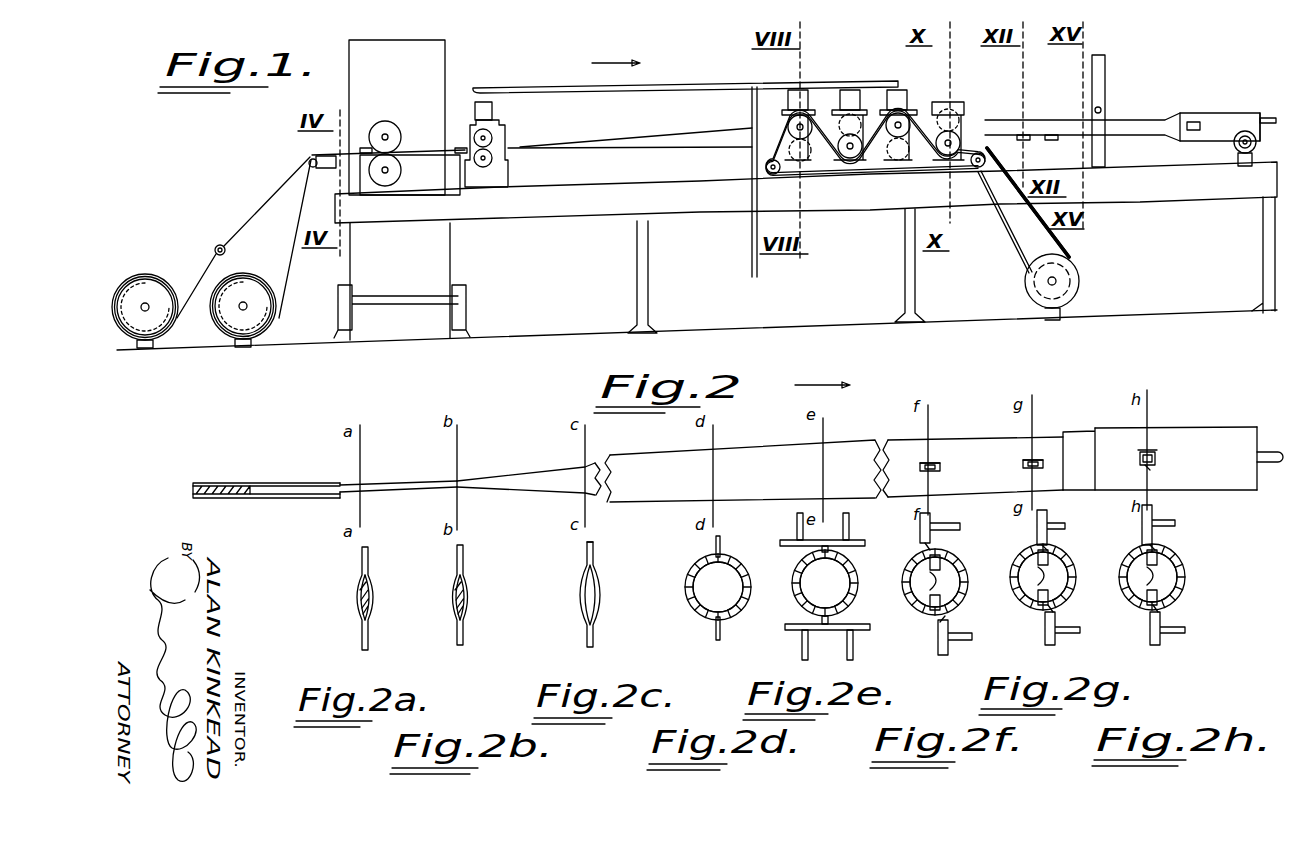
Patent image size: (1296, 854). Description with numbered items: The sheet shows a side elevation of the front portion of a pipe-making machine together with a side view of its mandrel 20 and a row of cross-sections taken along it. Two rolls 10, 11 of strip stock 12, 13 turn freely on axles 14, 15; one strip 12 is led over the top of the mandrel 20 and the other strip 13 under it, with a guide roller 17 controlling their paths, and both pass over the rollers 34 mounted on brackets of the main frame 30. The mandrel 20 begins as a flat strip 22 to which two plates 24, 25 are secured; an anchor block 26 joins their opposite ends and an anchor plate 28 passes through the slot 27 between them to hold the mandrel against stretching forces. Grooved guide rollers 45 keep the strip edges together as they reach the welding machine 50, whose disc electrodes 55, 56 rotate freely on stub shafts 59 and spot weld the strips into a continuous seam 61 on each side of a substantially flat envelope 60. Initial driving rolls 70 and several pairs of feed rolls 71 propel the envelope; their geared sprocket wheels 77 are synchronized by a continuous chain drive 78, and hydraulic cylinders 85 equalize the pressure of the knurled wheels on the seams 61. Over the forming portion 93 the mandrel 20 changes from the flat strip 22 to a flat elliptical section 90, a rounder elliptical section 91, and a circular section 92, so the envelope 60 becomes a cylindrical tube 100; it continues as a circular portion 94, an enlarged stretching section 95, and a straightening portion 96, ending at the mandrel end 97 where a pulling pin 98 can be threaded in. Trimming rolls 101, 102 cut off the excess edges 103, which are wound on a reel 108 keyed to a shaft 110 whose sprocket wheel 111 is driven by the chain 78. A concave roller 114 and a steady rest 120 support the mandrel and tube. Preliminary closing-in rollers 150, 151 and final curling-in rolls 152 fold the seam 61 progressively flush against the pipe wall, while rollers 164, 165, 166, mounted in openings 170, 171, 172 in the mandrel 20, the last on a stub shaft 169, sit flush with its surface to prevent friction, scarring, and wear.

In FIG. 1, the roll of strip stock 10 is at (133, 330).
In FIG. 1, the roll of strip stock 11 is at (232, 325).
In FIG. 1, the strip 12 is at (262, 206).
In FIG. 2A, the strip 12 is at (356, 591).
In FIG. 1, the strip 13 is at (301, 254).
In FIG. 2A, the strip 13 is at (372, 612).
In FIG. 1, the axle 14 is at (148, 302).
In FIG. 1, the axle 15 is at (250, 306).
In FIG. 1, the guide roller 17 is at (218, 244).
In FIG. 1, the mandrel 20 is at (688, 138).
In FIG. 2, the mandrel 20 is at (786, 438).
In FIG. 2, the flat strip 22 is at (380, 483).
In FIG. 2A, the flat strip 22 is at (372, 597).
In FIG. 2, the plate 24 is at (273, 485).
In FIG. 2, the plate 25 is at (295, 500).
In FIG. 2, the anchor block 26 is at (190, 496).
In FIG. 2, the slot 27 is at (269, 495).
In FIG. 2, the anchor plate 28 is at (250, 473).
In FIG. 1, the main frame 30 is at (637, 261).
In FIG. 1, the roller 34 is at (310, 154).
In FIG. 1, the guide roller 45 is at (365, 147).
In FIG. 1, the welding machine 50 is at (410, 86).
In FIG. 1, the disc electrode 55 is at (398, 129).
In FIG. 1, the disc electrode 56 is at (399, 173).
In FIG. 1, the stub shaft 59 is at (390, 138).
In FIG. 2B, the envelope 60 is at (470, 612).
In FIG. 2C, the envelope 60 is at (582, 613).
In FIG. 2B, the seam 61 is at (466, 565).
In FIG. 2C, the seam 61 is at (601, 560).
In FIG. 2D, the seam 61 is at (714, 545).
In FIG. 2E, the seam 61 is at (812, 549).
In FIG. 2F, the seam 61 is at (948, 550).
In FIG. 2G, the seam 61 is at (1035, 545).
In FIG. 2H, the seam 61 is at (1140, 545).
In FIG. 1, the initial driving roll 70 is at (497, 138).
In FIG. 1, the feed roll 71 is at (855, 90).
In FIG. 1, the geared sprocket wheel 77 is at (790, 118).
In FIG. 1, the chain drive 78 is at (831, 160).
In FIG. 1, the hydraulic cylinder 85 is at (493, 110).
In FIG. 2, the flat elliptical section 90 is at (462, 480).
In FIG. 2B, the flat elliptical section 90 is at (470, 595).
In FIG. 2, the rounder elliptical section 91 is at (593, 468).
In FIG. 2C, the rounder elliptical section 91 is at (579, 590).
In FIG. 2D, the circular section 92 is at (706, 596).
In FIG. 2, the forming portion 93 is at (540, 493).
In FIG. 1, the circular portion 94 is at (1139, 119).
In FIG. 2, the circular portion 94 is at (880, 443).
In FIG. 2E, the circular portion 94 is at (800, 604).
In FIG. 2F, the circular portion 94 is at (962, 585).
In FIG. 1, the stretching section 95 is at (1172, 112).
In FIG. 2, the stretching section 95 is at (1078, 437).
In FIG. 1, the straightening portion 96 is at (1215, 127).
In FIG. 2, the straightening portion 96 is at (1222, 428).
In FIG. 2H, the straightening portion 96 is at (1185, 582).
In FIG. 1, the mandrel end 97 is at (1262, 114).
In FIG. 2, the mandrel end 97 is at (1258, 492).
In FIG. 1, the pulling pin 98 is at (1270, 116).
In FIG. 2, the pulling pin 98 is at (1272, 450).
In FIG. 2D, the tube 100 is at (706, 616).
In FIG. 2E, the tube 100 is at (851, 572).
In FIG. 2F, the tube 100 is at (966, 570).
In FIG. 2G, the tube 100 is at (1070, 567).
In FIG. 2H, the tube 100 is at (1185, 565).
In FIG. 1, the trimming roll 101 is at (963, 119).
In FIG. 2E, the trimming roll 101 is at (862, 542).
In FIG. 2E, the trimming roll 102 is at (796, 540).
In FIG. 1, the trimmed edge 103 is at (1065, 246).
In FIG. 2E, the trimmed edge 103 is at (848, 530).
In FIG. 1, the reel 108 is at (1080, 280).
In FIG. 1, the shaft 110 is at (1048, 281).
In FIG. 1, the sprocket wheel 111 is at (1070, 290).
In FIG. 1, the concave roller 114 is at (1240, 152).
In FIG. 1, the steady rest 120 is at (1115, 61).
In FIG. 1, the preliminary closing-in roller 150 is at (1025, 132).
In FIG. 2F, the preliminary closing-in roller 150 is at (931, 515).
In FIG. 1, the preliminary closing-in roller 151 is at (1051, 132).
In FIG. 2G, the preliminary closing-in roller 151 is at (1048, 515).
In FIG. 1, the curling-in roll 152 is at (1193, 120).
In FIG. 2H, the curling-in roll 152 is at (1155, 512).
In FIG. 2, the roller 164 is at (940, 470).
In FIG. 2F, the roller 164 is at (930, 582).
In FIG. 2, the roller 165 is at (1030, 468).
In FIG. 2G, the roller 165 is at (1043, 577).
In FIG. 2, the roller 166 is at (1150, 466).
In FIG. 2H, the roller 166 is at (1147, 577).
In FIG. 2, the stub shaft 169 is at (1140, 455).
In FIG. 2, the opening 170 is at (938, 462).
In FIG. 2, the opening 171 is at (1035, 458).
In FIG. 2, the opening 172 is at (1155, 455).